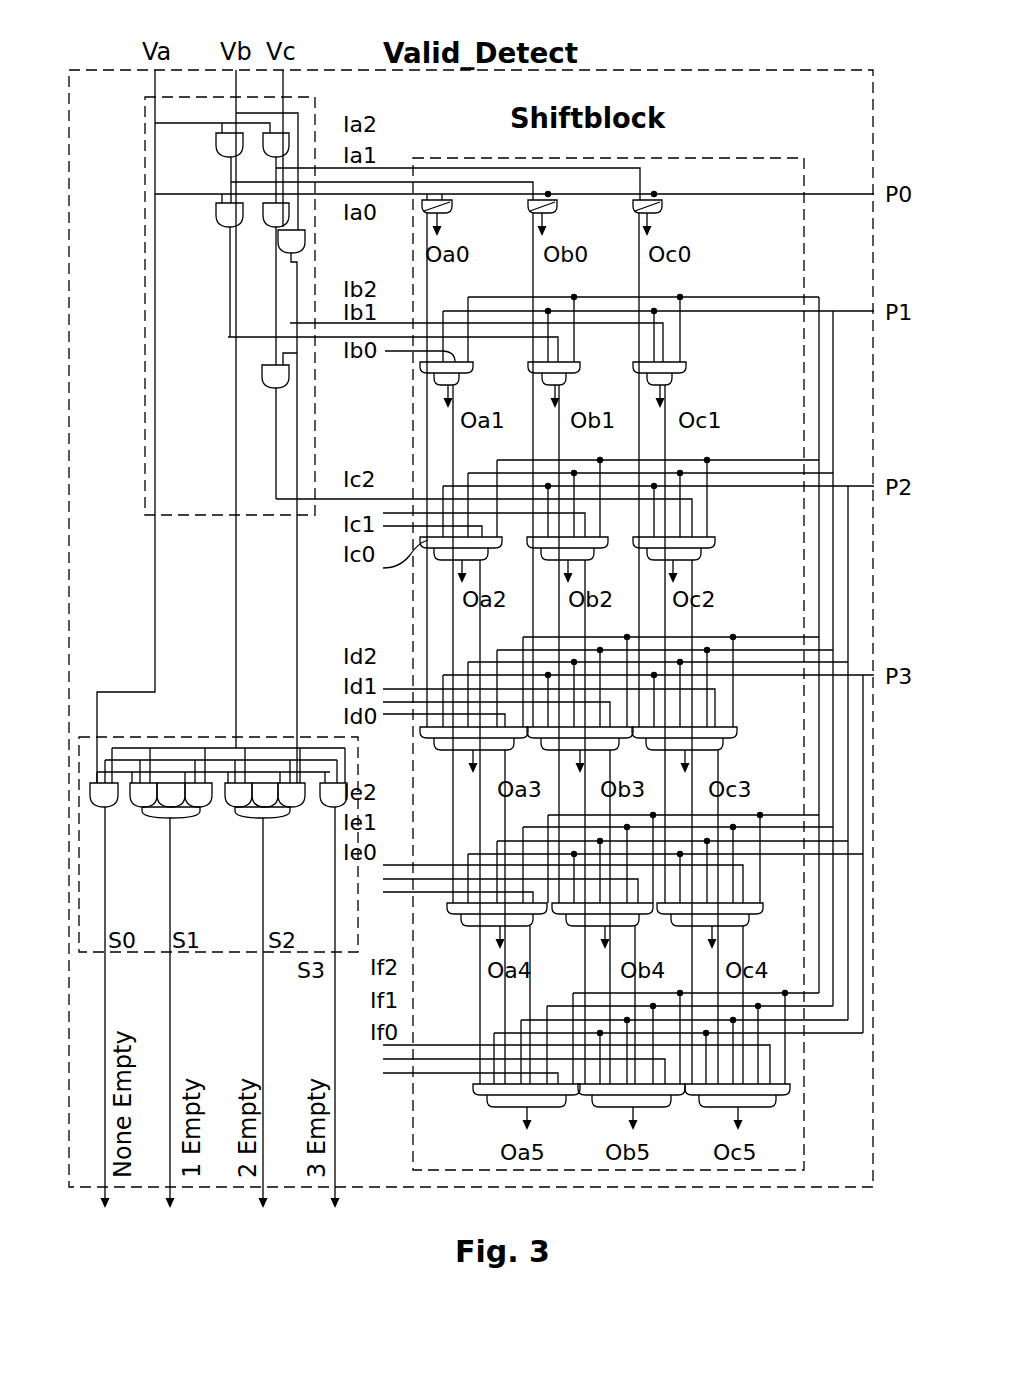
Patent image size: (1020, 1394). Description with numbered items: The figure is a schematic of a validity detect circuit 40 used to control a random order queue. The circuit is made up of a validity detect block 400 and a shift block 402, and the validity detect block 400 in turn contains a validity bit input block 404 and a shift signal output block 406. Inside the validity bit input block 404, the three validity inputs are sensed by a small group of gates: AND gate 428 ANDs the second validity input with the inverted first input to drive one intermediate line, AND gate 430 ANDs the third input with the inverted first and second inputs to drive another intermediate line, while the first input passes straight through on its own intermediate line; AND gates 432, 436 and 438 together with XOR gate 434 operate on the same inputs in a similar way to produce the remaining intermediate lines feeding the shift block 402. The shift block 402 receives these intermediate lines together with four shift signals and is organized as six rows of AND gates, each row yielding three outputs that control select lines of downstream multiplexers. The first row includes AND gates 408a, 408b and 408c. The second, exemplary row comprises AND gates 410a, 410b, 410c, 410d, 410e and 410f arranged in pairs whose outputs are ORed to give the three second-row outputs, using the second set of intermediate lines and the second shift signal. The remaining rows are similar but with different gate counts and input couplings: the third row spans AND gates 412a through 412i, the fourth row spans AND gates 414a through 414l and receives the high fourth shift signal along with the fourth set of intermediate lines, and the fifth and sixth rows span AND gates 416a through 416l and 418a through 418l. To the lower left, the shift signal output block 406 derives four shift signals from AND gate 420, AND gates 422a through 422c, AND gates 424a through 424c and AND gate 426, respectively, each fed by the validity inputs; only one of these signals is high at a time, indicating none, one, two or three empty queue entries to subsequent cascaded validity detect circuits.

The validity detect circuit 40 is at (498, 31).
The validity detect block 400 is at (471, 597).
The shift block 402 is at (768, 139).
The validity bit input block 404 is at (146, 343).
The shift signal output block 406 is at (258, 953).
The AND gate 408a is at (446, 204).
The AND gate 408b is at (551, 204).
The AND gate 408c is at (656, 204).
The AND gate 410a is at (436, 378).
The AND gate 410b is at (408, 394).
The AND gate 410c is at (528, 367).
The AND gate 410d is at (544, 385).
The AND gate 410e is at (650, 362).
The AND gate 410f is at (689, 369).
The AND gate 412a is at (420, 550).
The AND gate 412i is at (715, 540).
The AND gate 414a is at (420, 732).
The AND gate 414l is at (737, 730).
The AND gate 416a is at (447, 908).
The AND gate 416l is at (763, 906).
The AND gate 418a is at (473, 1090).
The AND gate 418l is at (790, 1086).
The AND gate 420 is at (110, 807).
The AND gate 422a is at (135, 807).
The AND gate 422c is at (204, 807).
The AND gate 424a is at (232, 807).
The AND gate 424c is at (296, 807).
The AND gate 426 is at (335, 807).
The AND gate 428 is at (216, 145).
The AND gate 430 is at (285, 145).
The AND gate 432 is at (222, 222).
The XOR gate 434 is at (265, 220).
The AND gate 436 is at (280, 248).
The AND gate 438 is at (263, 380).